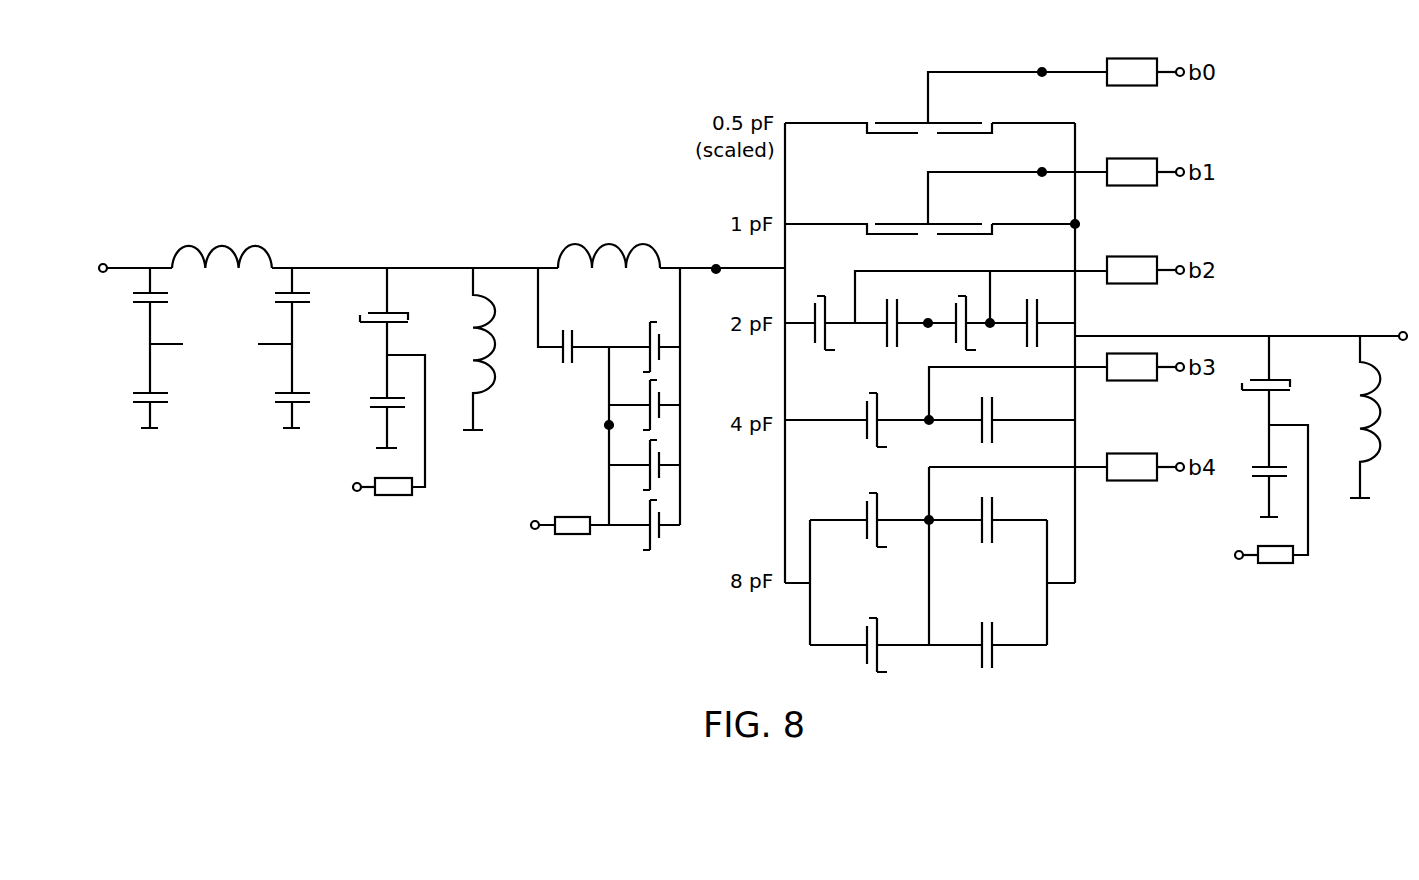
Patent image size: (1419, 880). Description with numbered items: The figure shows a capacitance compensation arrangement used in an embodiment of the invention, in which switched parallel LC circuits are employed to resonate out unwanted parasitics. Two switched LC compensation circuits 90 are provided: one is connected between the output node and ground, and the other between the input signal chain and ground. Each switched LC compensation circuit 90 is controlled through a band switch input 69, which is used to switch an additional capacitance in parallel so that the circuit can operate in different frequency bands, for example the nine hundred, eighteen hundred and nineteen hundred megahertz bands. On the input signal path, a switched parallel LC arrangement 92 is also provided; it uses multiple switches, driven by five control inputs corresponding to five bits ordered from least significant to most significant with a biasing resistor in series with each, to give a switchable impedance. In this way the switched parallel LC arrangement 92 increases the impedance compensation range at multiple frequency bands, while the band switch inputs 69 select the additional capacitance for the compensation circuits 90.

The band switch input 69 is at (353, 490).
The switched LC compensation circuit 90 is at (404, 242).
The switched parallel LC arrangement 92 is at (608, 225).